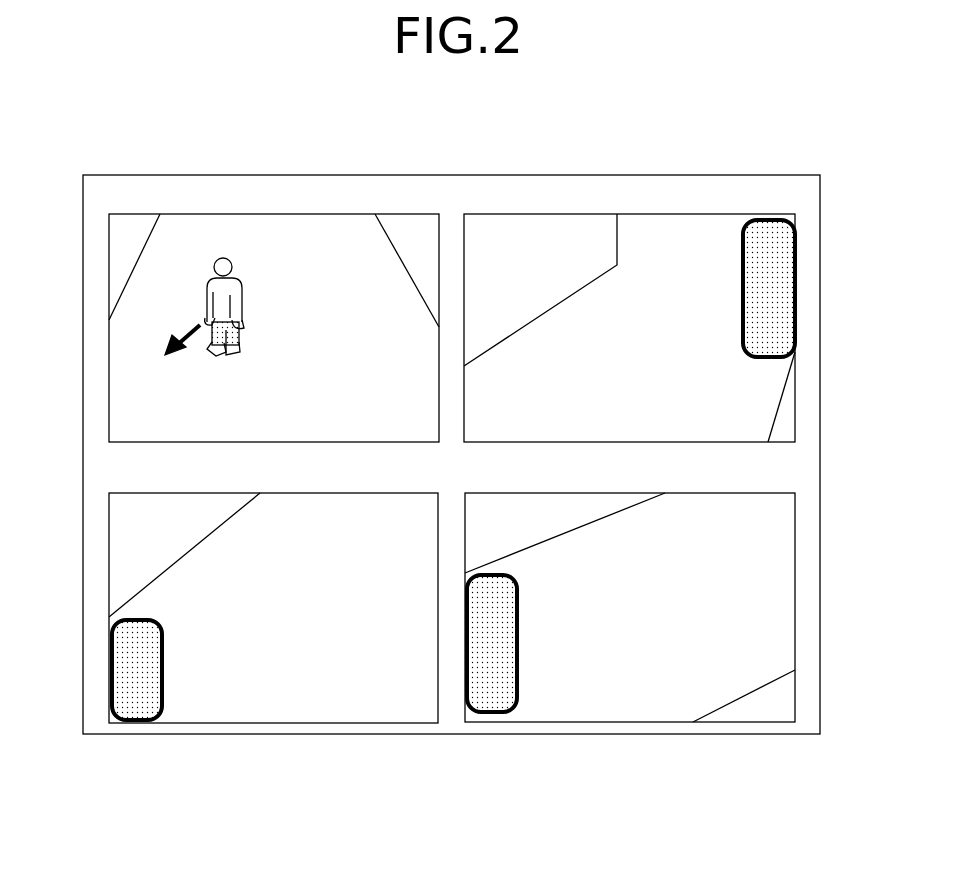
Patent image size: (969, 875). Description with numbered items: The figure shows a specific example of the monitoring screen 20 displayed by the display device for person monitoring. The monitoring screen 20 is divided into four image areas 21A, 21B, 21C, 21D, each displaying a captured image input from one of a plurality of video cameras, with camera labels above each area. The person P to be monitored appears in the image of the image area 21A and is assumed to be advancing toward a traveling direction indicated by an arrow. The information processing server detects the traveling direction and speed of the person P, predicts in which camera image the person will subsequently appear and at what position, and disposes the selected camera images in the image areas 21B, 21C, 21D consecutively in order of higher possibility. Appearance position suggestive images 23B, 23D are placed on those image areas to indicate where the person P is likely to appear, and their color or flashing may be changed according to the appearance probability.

The monitoring screen 20 is at (752, 175).
The image area 21A is at (243, 285).
The image area 21B is at (672, 284).
The image area 21C is at (272, 723).
The image area 21D is at (627, 722).
The appearance position suggestive image 23B is at (797, 298).
The appearance position suggestive image 23D is at (137, 723).
The person P is at (203, 282).